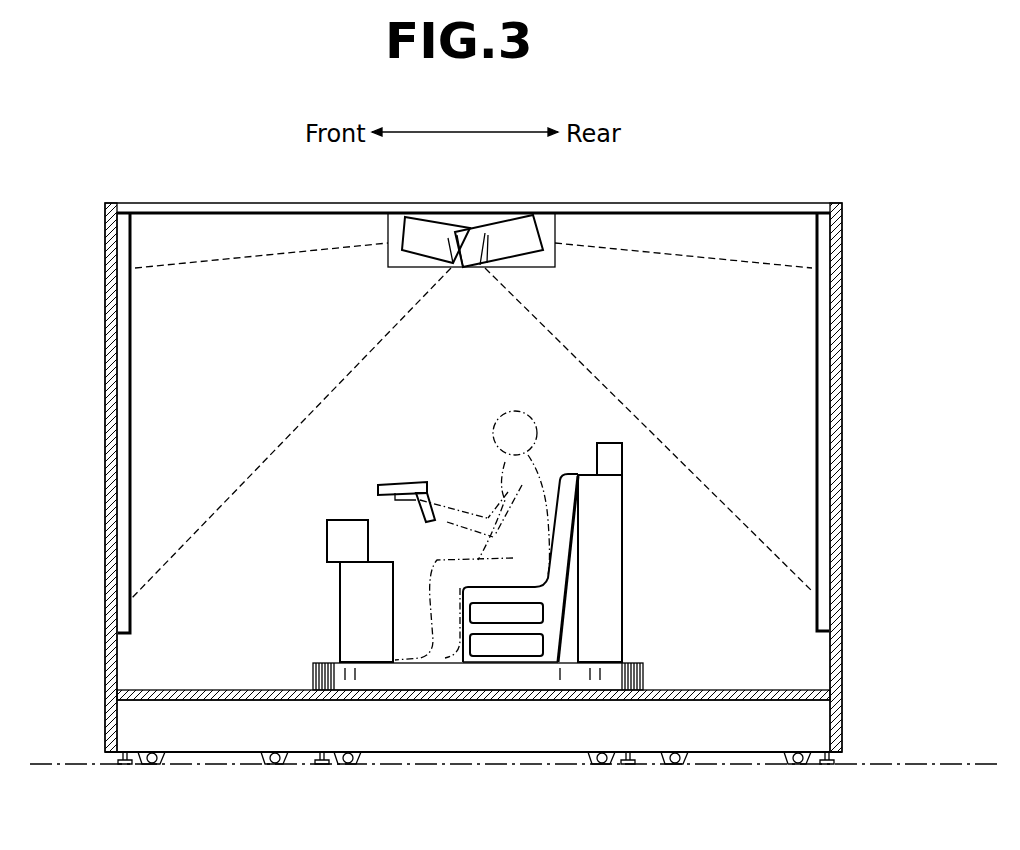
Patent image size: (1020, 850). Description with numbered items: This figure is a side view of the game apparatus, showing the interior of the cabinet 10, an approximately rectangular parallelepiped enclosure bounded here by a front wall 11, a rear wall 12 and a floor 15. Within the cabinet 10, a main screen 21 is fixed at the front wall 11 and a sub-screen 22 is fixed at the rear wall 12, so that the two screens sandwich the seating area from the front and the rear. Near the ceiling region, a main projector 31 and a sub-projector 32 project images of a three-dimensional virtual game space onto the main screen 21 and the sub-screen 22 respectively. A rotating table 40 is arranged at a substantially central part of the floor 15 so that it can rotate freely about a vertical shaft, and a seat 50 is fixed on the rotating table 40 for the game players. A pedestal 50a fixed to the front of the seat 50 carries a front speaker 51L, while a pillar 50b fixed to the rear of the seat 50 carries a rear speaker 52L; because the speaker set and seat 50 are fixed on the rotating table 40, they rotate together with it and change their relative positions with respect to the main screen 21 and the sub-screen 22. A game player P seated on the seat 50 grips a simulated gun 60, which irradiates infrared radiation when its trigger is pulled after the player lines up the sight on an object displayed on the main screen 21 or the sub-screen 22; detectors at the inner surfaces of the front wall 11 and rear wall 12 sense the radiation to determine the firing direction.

The cabinet 10 is at (758, 203).
The front wall 11 is at (106, 297).
The rear wall 12 is at (842, 330).
The floor 15 is at (503, 735).
The main screen 21 is at (132, 298).
The sub-screen 22 is at (815, 298).
The main projector 31 is at (533, 225).
The sub-projector 32 is at (420, 250).
The rotating table 40 is at (643, 672).
The seat 50 is at (556, 592).
The pedestal 50a is at (340, 625).
The pillar 50b is at (622, 498).
The front speaker 51L is at (327, 545).
The rear speaker 52L is at (603, 443).
The simulated gun 60 is at (400, 484).
The game player P is at (498, 419).